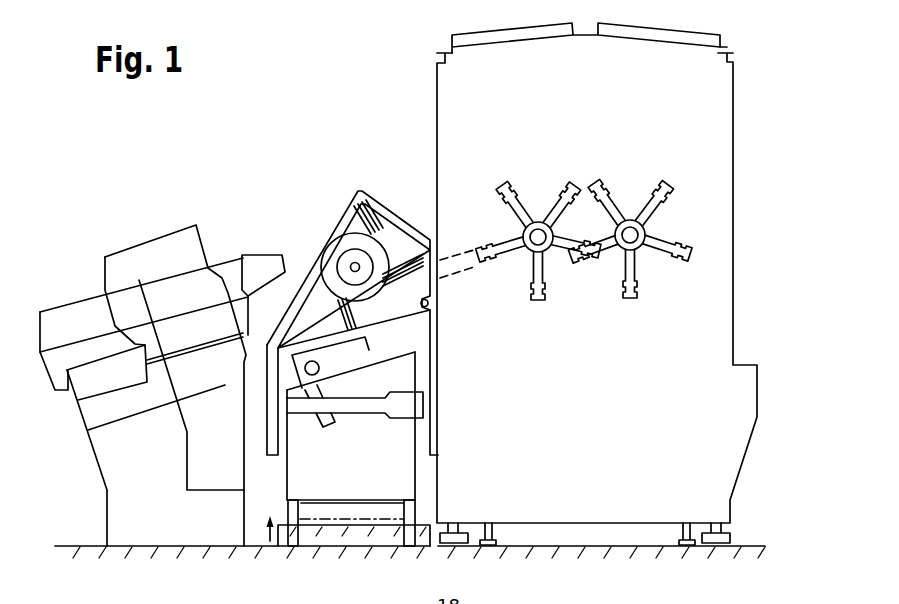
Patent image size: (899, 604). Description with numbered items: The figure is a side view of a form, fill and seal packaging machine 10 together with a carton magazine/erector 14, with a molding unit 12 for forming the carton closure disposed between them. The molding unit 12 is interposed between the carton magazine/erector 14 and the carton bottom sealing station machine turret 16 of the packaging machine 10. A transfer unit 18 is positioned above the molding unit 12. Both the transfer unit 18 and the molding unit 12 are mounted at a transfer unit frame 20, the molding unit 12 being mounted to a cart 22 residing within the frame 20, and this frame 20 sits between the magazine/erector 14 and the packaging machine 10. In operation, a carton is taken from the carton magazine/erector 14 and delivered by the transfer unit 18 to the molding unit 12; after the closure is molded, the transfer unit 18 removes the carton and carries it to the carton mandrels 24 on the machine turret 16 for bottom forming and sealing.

The form, fill and seal packaging machine 10 is at (748, 92).
The molding unit 12 is at (329, 379).
The carton magazine/erector 14 is at (229, 260).
The carton bottom sealing station machine turret 16 is at (628, 265).
The transfer unit 18 is at (346, 231).
The transfer unit frame 20 is at (387, 198).
The cart 22 is at (385, 478).
The carton mandrels 24 is at (547, 285).